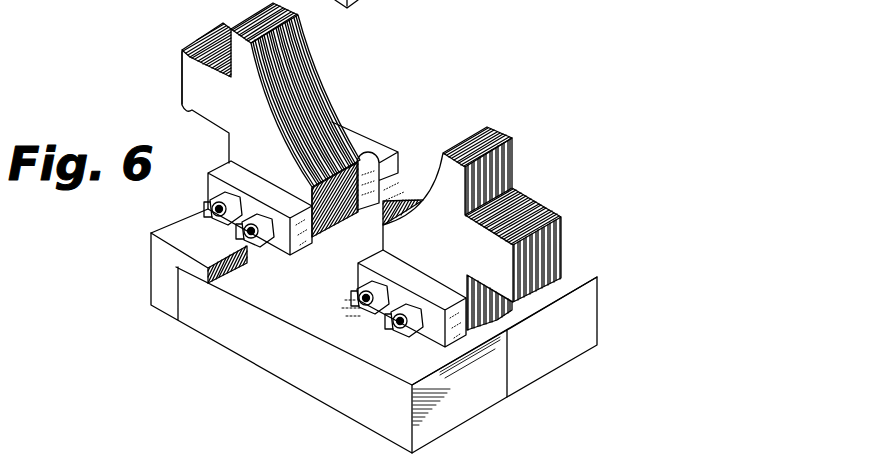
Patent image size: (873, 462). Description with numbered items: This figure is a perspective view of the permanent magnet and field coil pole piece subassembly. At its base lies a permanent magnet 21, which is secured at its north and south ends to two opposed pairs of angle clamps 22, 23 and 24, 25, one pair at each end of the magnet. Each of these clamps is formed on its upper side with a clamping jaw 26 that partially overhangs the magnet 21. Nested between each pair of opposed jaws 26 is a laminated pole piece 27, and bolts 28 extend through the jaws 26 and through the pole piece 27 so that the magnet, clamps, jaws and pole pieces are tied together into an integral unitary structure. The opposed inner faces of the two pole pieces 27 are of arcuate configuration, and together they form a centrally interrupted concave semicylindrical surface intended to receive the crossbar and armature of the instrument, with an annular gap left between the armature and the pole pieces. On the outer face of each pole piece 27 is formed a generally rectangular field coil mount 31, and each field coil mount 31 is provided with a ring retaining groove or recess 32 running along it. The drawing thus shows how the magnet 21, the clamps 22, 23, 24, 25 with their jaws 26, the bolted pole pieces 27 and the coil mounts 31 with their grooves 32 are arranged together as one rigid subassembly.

The permanent magnet 21 is at (310, 293).
The angle clamp 22 is at (463, 413).
The angle clamp 23 is at (550, 358).
The angle clamp 24 is at (188, 215).
The angle clamp 25 is at (357, 135).
The clamping jaw 26 is at (228, 168).
The laminated pole piece 27 is at (246, 119).
The bolt 28 is at (242, 233).
The field coil mount 31 is at (185, 85).
The ring retaining groove 32 is at (187, 61).